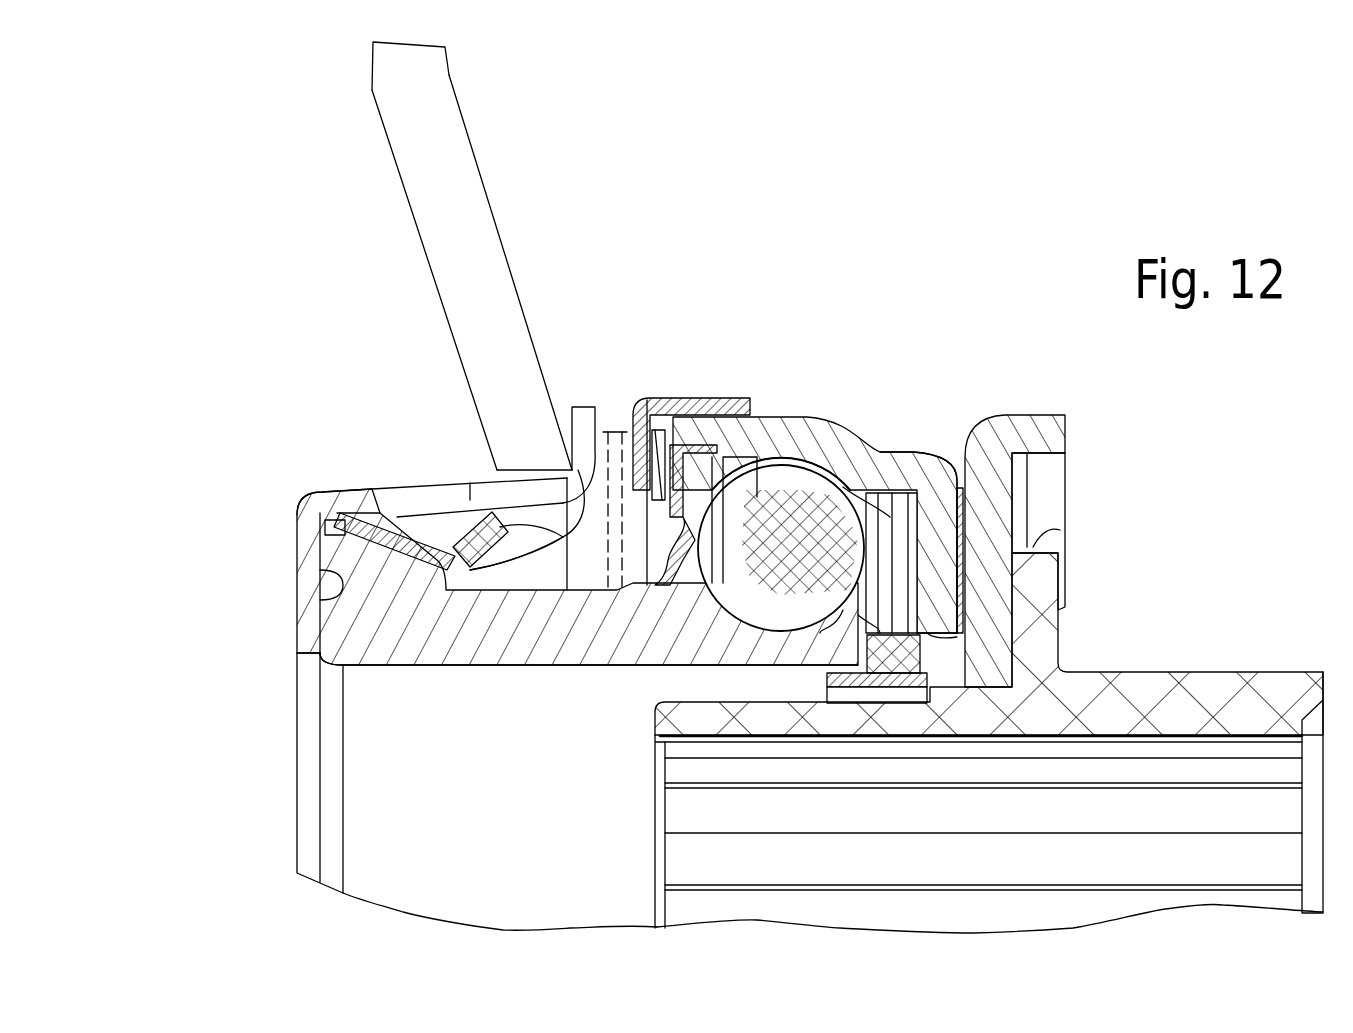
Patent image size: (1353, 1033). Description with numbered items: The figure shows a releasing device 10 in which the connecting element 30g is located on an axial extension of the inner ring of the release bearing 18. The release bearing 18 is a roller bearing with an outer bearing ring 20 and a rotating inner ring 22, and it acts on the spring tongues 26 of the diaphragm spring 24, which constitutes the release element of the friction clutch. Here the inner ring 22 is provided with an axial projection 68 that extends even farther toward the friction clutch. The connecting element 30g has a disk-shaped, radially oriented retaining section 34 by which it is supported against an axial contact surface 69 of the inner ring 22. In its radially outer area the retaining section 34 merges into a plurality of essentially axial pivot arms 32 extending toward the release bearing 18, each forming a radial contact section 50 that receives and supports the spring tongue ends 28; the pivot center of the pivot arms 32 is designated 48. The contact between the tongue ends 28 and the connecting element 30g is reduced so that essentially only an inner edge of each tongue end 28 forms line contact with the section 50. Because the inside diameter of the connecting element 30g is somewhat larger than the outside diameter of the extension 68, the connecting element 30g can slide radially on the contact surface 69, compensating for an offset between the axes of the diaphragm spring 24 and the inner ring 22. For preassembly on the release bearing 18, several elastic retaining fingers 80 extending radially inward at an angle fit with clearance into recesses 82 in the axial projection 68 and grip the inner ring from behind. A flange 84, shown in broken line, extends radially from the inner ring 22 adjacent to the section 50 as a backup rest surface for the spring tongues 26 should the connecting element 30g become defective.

The releasing device 10 is at (873, 290).
The release bearing 18 is at (823, 412).
The outer bearing ring 20 is at (860, 456).
The inner bearing ring 22 is at (657, 648).
The diaphragm spring 24 is at (473, 93).
The spring tongues 26 is at (453, 200).
The free ends of the spring tongues 28 is at (548, 425).
The connecting element 30g is at (403, 456).
The pivot arms 32 is at (437, 487).
The retaining section 34 is at (305, 560).
The pivot center 48 is at (323, 503).
The radial contact section 50 is at (615, 430).
The axial projection 68 is at (400, 645).
The axial contact surface 69 is at (330, 606).
The elastic retaining fingers 80 is at (382, 512).
The recesses 82 is at (327, 527).
The flange 84 is at (640, 420).